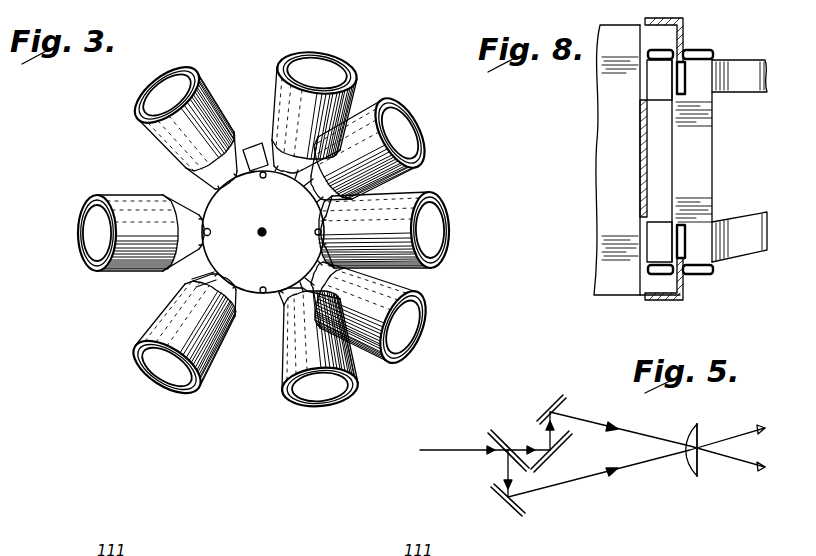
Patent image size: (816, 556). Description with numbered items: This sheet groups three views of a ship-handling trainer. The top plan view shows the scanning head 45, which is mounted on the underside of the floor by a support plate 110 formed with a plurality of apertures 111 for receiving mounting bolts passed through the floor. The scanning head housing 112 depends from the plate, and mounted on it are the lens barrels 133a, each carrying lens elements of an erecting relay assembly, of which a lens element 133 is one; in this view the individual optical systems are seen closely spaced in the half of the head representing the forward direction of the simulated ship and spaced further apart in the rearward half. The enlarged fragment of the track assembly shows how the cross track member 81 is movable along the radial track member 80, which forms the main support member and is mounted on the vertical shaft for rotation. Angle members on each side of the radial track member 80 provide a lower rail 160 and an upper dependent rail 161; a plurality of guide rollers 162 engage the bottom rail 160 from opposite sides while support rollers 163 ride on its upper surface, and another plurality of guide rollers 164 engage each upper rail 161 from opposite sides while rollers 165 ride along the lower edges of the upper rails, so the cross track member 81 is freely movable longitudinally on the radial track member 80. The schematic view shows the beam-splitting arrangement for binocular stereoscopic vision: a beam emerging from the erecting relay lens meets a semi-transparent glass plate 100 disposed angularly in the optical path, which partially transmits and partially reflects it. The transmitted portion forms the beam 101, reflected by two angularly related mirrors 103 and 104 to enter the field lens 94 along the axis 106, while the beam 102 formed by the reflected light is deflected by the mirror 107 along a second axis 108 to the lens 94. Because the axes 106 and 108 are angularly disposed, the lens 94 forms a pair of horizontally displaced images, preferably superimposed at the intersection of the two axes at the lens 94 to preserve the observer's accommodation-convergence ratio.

In FIG. 3, the support plate 110 is at (280, 217).
In FIG. 3, the apertures 111 is at (210, 235).
In FIG. 3, the scanning head housing 112 is at (253, 146).
In FIG. 3, the scanning head 45 is at (186, 281).
In FIG. 3, the lens element 133 is at (100, 228).
In FIG. 3, the lens barrel 133a is at (187, 166).
In FIG. 8, the radial track member 80 is at (604, 296).
In FIG. 8, the cross track member 81 is at (764, 93).
In FIG. 8, the lower rail 160 is at (684, 296).
In FIG. 8, the upper dependent rail 161 is at (686, 34).
In FIG. 8, the guide rollers 162 is at (645, 272).
In FIG. 8, the support rollers 163 is at (688, 223).
In FIG. 8, the guide rollers 164 is at (647, 50).
In FIG. 8, the rollers 165 is at (688, 93).
In FIG. 5, the field lens 94 is at (693, 477).
In FIG. 5, the semi-transparent glass plate 100 is at (503, 434).
In FIG. 5, the beam 101 is at (515, 445).
In FIG. 5, the beam 102 is at (503, 478).
In FIG. 5, the mirror 103 is at (556, 446).
In FIG. 5, the mirror 104 is at (558, 400).
In FIG. 5, the axis 106 is at (651, 429).
In FIG. 5, the mirror 107 is at (519, 508).
In FIG. 5, the second axis 108 is at (603, 480).